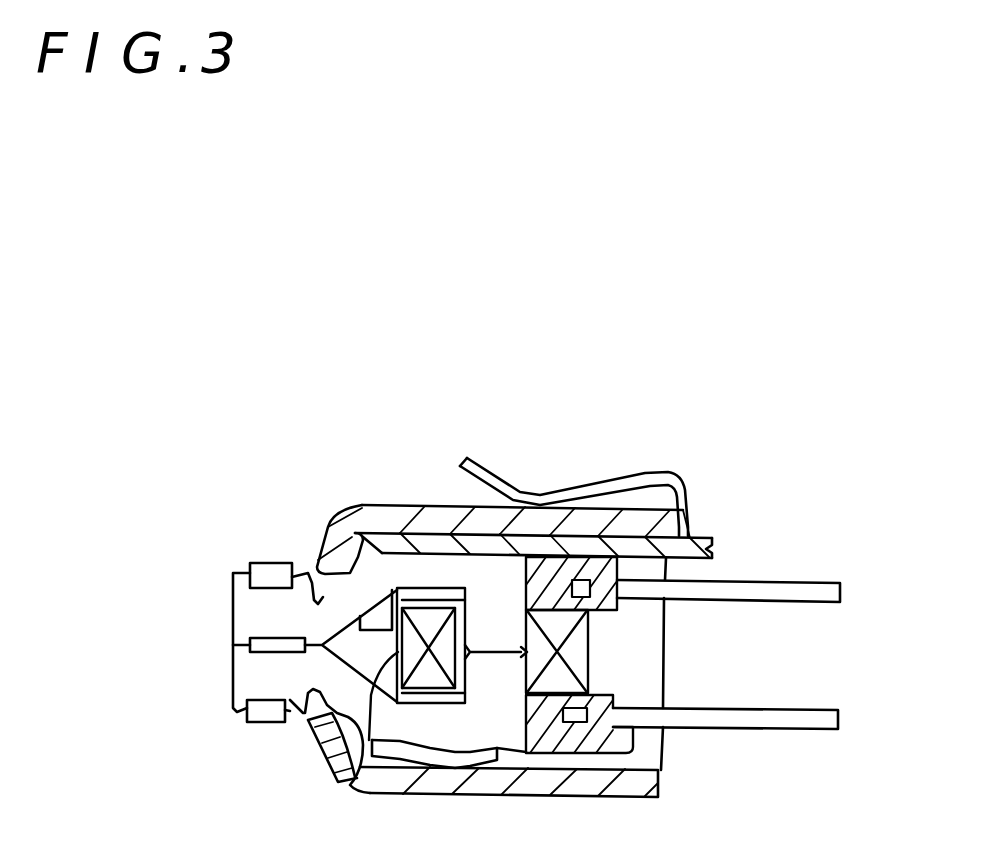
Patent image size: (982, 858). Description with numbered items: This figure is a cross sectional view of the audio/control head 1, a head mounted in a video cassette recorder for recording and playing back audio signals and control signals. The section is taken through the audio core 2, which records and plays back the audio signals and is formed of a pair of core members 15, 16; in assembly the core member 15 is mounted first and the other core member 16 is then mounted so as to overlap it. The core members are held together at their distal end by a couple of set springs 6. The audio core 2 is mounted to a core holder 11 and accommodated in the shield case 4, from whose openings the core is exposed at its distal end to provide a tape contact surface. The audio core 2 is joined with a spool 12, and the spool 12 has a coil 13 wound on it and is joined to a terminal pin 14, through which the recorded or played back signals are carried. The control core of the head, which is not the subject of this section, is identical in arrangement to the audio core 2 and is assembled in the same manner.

The audio/control head 1 is at (547, 448).
The audio core 2 is at (250, 634).
The shield case 4 is at (417, 507).
The set springs 6 is at (270, 563).
The core holder 11 is at (715, 543).
The spool 12 is at (610, 600).
The coil 13 is at (340, 780).
The terminal pin 14 is at (775, 593).
The core member 15 is at (247, 602).
The core member 16 is at (243, 680).